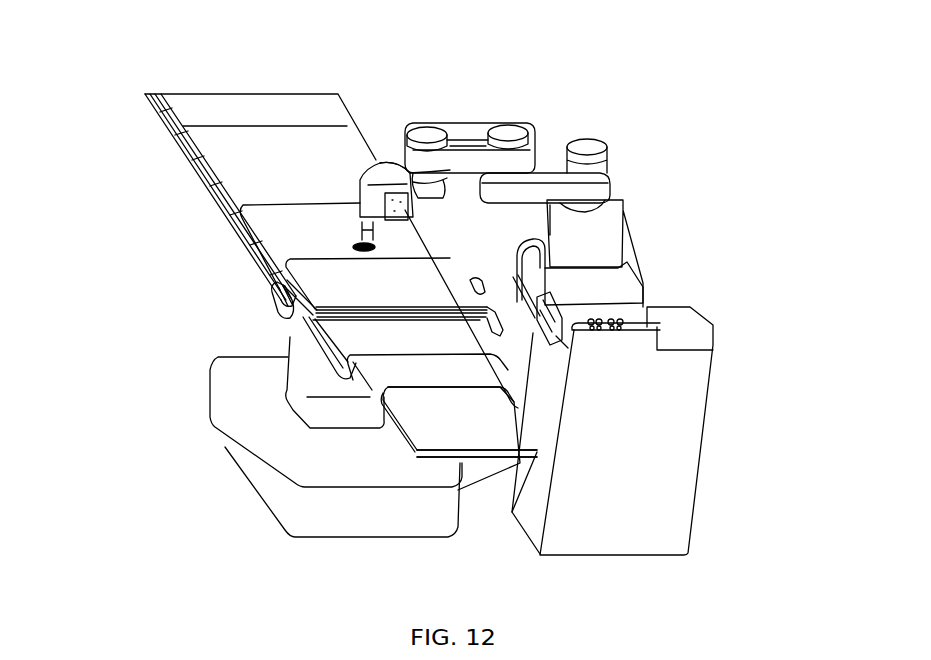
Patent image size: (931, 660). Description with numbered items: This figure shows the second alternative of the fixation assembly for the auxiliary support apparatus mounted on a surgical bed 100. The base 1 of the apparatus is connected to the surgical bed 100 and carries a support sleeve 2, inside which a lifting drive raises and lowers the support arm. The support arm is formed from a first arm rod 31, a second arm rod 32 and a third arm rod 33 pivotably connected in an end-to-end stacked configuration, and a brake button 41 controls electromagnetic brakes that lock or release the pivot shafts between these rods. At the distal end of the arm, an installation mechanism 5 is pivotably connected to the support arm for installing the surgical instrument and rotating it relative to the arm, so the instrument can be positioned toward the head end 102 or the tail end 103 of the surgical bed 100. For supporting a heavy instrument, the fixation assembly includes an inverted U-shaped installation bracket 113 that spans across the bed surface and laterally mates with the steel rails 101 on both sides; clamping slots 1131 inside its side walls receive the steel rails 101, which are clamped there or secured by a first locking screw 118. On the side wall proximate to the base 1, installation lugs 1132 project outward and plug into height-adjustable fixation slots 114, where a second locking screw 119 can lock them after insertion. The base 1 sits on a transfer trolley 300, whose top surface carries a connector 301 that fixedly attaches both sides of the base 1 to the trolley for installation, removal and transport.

The surgical bed 100 is at (177, 199).
The steel rail 101 is at (253, 258).
The head end 102 is at (237, 103).
The tail end 103 is at (466, 437).
The installation bracket 113 is at (288, 291).
The clamping slot 1131 is at (292, 357).
The installation lug 1132 is at (493, 337).
The fixation slot 114 is at (568, 348).
The first locking screw 118 is at (285, 322).
The second locking screw 119 is at (548, 335).
The base 1 is at (628, 295).
The support sleeve 2 is at (607, 240).
The first arm rod 31 is at (547, 183).
The second arm rod 32 is at (487, 135).
The third arm rod 33 is at (397, 173).
The brake button 41 is at (468, 137).
The installation mechanism 5 is at (353, 175).
The transfer trolley 300 is at (668, 428).
The connector 301 is at (600, 325).